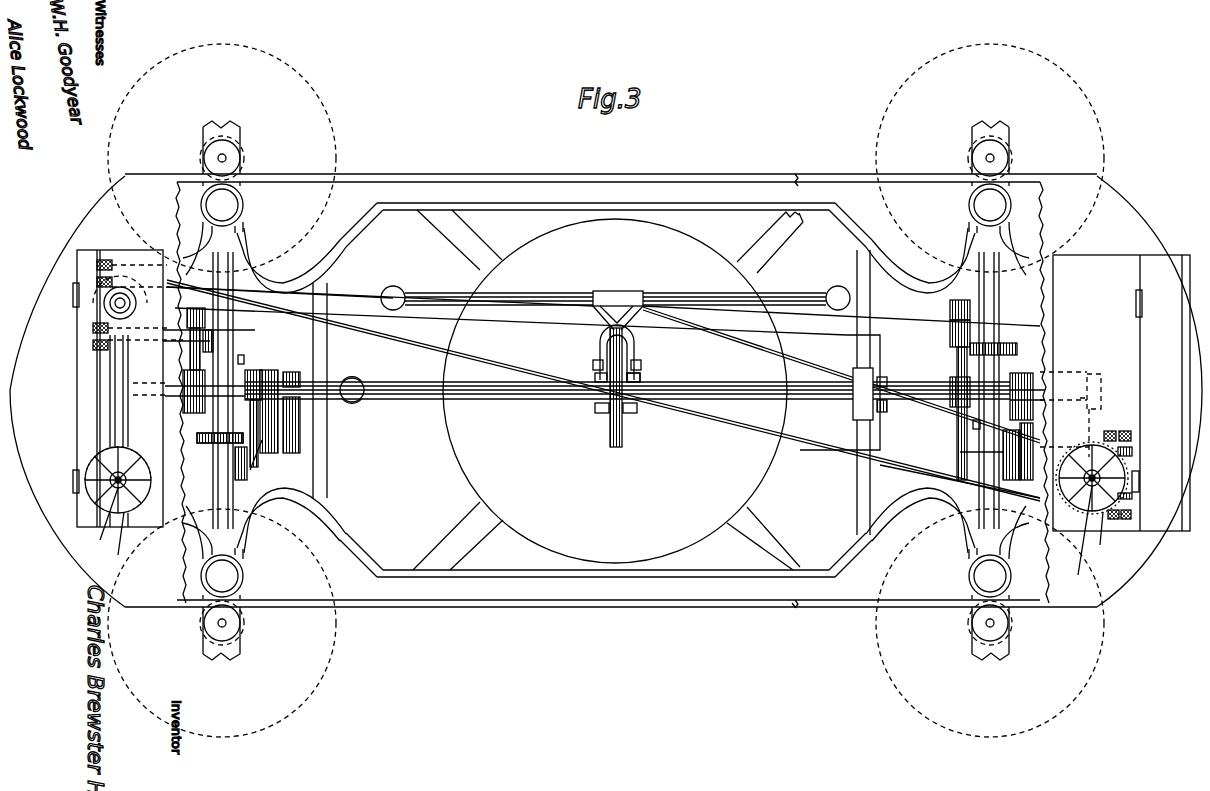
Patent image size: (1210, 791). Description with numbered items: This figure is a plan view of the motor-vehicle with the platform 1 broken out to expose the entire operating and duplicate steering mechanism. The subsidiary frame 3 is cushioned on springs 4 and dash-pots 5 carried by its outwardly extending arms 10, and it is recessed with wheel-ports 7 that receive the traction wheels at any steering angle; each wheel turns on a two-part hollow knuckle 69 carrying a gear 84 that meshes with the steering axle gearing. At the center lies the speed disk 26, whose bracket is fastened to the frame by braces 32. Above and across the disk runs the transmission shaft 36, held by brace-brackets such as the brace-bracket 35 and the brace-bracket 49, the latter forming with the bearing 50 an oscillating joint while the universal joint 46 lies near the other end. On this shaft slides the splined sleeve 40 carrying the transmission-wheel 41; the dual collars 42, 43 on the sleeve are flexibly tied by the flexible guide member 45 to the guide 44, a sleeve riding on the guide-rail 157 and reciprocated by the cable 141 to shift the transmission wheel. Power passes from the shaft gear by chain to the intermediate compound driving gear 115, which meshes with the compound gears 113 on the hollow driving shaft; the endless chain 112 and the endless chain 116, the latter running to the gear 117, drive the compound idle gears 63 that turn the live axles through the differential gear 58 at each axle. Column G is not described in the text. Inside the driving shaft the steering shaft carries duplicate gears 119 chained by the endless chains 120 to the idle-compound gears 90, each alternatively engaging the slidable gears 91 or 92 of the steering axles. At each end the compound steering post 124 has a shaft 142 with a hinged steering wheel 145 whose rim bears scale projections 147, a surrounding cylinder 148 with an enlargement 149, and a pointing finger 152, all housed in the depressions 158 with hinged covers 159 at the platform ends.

The freight carrying platform 1 is at (611, 392).
The subsidiary frame 3 is at (606, 389).
The springs 4 is at (244, 220).
The dash-pots 5 is at (240, 204).
The wheel-ports 7 is at (615, 390).
The arms 10 is at (606, 390).
The speed disk 26 is at (615, 391).
The braces 32 is at (608, 390).
The brace-bracket 35 is at (856, 412).
The transmission shaft 36 is at (434, 398).
The splined slidable sleeve 40 is at (642, 378).
The transmission-wheel 41 is at (624, 440).
The collar 42 is at (637, 410).
The collar 43 is at (596, 410).
The guide 44 is at (620, 298).
The flexible guide member 45 is at (598, 345).
The universal joint 46 is at (354, 404).
The brace-bracket 49 is at (860, 478).
The bearing 50 is at (888, 408).
The differential gear 58 is at (205, 443).
The compound idle gears 63 is at (236, 463).
The hollow knuckle 69 is at (227, 158).
The gears 84 is at (203, 158).
The idle-compound gear 90 is at (214, 338).
The slidable gear 91 is at (280, 284).
The slidable gear 92 is at (242, 360).
The endless chain 112 is at (262, 480).
The compound gears 113 is at (292, 372).
The intermediate compound driving gear 115 is at (300, 430).
The endless chain 116 is at (950, 314).
The gear 117 is at (256, 372).
The duplicate gears 119 is at (190, 405).
The endless chains 120 is at (202, 436).
The compound steering post 124 is at (112, 418).
The cable 141 is at (430, 314).
The shaft 142 is at (590, 539).
The steering wheel 145 is at (622, 470).
The projections 147 is at (128, 462).
The cylinder 148 is at (108, 485).
The enlargement 149 is at (105, 352).
The pointing finger 152 is at (128, 488).
The guide-rail 157 is at (520, 290).
The depressions 158 is at (631, 390).
The hinged covers 159 is at (628, 335).
The column G is at (212, 480).